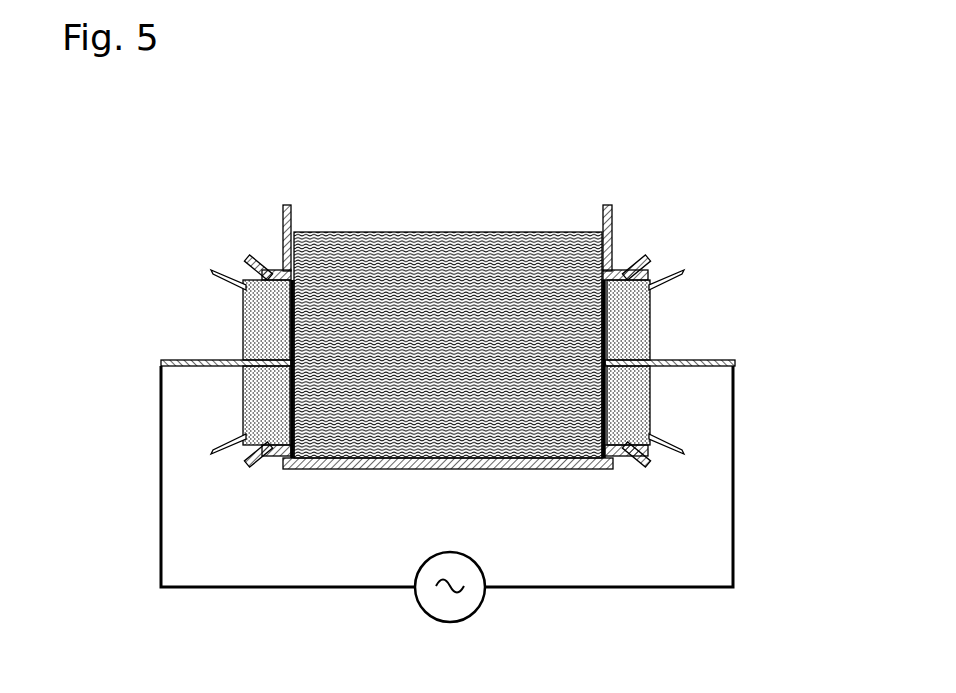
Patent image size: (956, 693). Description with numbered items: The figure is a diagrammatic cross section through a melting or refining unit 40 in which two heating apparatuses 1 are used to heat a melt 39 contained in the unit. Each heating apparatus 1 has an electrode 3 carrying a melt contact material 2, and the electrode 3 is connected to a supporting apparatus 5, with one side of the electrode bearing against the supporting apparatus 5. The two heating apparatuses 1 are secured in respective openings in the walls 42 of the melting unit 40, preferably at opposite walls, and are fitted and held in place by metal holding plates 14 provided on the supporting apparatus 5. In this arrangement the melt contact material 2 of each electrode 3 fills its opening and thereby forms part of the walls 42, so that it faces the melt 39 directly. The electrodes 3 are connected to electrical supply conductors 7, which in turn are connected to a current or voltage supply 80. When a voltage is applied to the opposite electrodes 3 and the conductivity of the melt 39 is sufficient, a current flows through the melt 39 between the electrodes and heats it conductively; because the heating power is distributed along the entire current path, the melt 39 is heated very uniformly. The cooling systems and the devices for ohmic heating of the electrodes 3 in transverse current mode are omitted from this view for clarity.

The heating apparatus 1 is at (243, 320).
The melt contact material 2 is at (293, 313).
The electrode 3 is at (249, 257).
The supporting apparatus 5 is at (243, 412).
The electrical supply conductors 7 is at (185, 361).
The metal holding plates 14 is at (683, 272).
The melt 39 is at (416, 232).
The melting unit 40 is at (524, 150).
The walls 42 is at (283, 232).
The current or voltage supply 80 is at (447, 622).